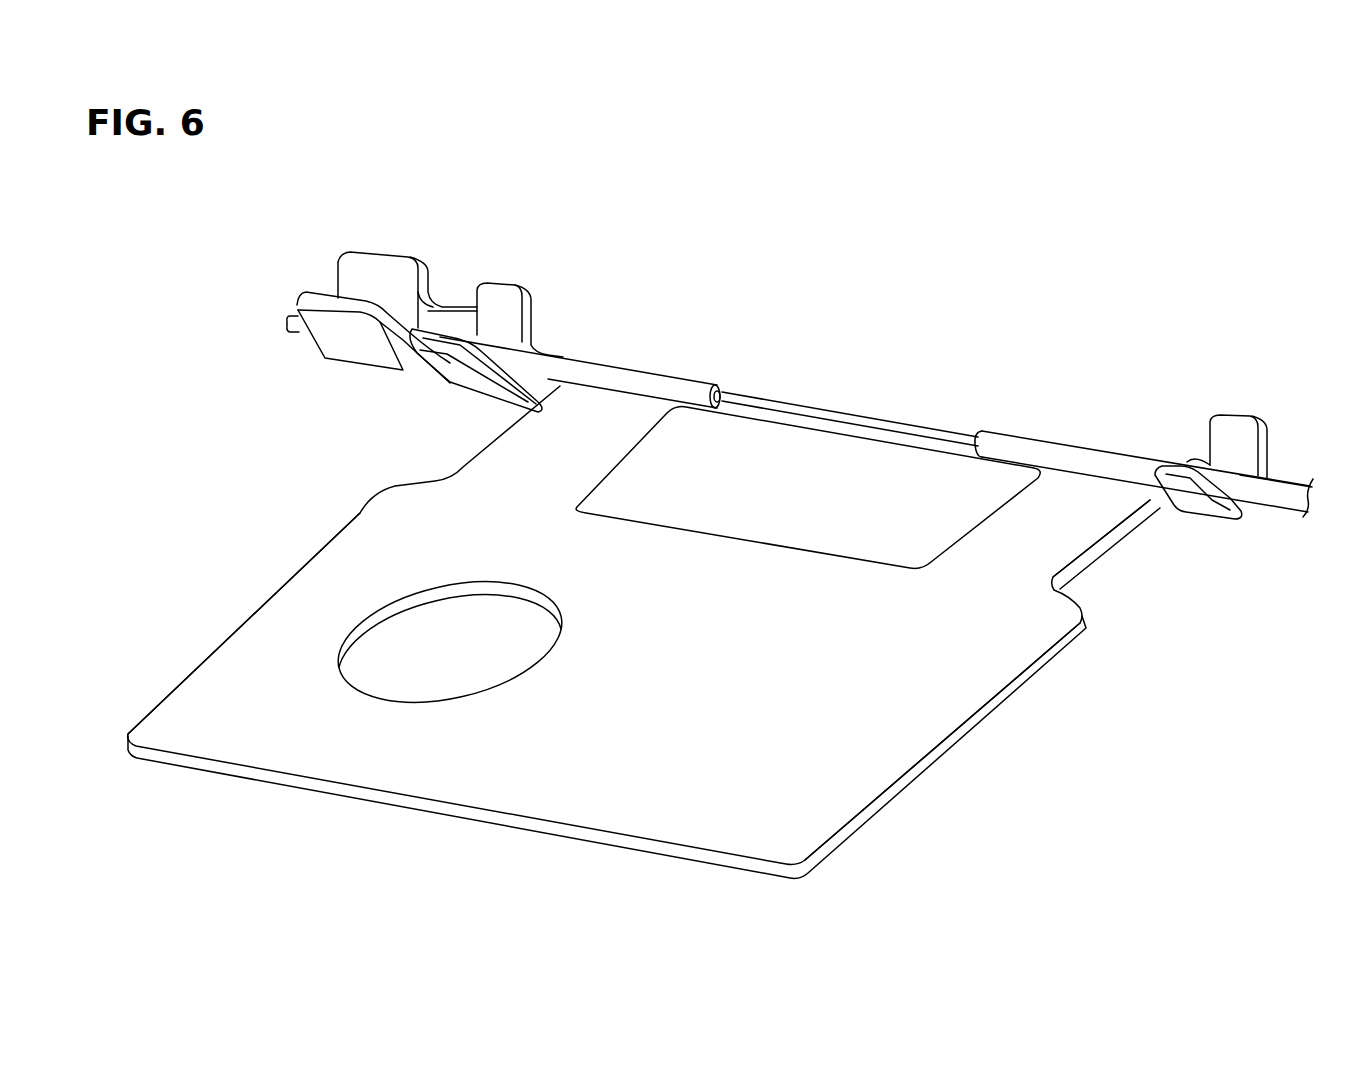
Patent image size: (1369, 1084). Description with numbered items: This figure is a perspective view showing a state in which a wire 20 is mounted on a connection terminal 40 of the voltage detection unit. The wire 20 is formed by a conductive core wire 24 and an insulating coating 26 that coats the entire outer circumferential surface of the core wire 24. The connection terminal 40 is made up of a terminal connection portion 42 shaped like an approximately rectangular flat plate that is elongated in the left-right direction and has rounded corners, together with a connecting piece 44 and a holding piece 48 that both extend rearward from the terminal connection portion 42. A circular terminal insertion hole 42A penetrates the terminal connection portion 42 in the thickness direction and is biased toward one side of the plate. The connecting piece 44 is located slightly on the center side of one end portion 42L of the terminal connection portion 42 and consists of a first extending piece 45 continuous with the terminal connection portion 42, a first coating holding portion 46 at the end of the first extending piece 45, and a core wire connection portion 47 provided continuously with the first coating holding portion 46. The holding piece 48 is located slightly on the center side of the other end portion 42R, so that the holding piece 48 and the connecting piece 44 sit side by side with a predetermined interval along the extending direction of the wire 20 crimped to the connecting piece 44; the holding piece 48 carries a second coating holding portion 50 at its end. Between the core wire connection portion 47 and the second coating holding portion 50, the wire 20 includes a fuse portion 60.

The wire 20 is at (1267, 497).
The core wire 24 is at (291, 321).
The insulating coating 26 is at (626, 375).
The connection terminal 40 is at (978, 780).
The terminal connection portion 42 is at (623, 803).
The terminal insertion hole 42A is at (380, 620).
The one end portion 42L is at (270, 742).
The other end portion 42R is at (1003, 628).
The connecting piece 44 is at (505, 262).
The first extending piece 45 is at (612, 430).
The first coating holding portion 46 is at (552, 287).
The core wire connection portion 47 is at (380, 230).
The holding piece 48 is at (1188, 403).
The second coating holding portion 50 is at (1274, 400).
The fuse portion 60 is at (850, 415).